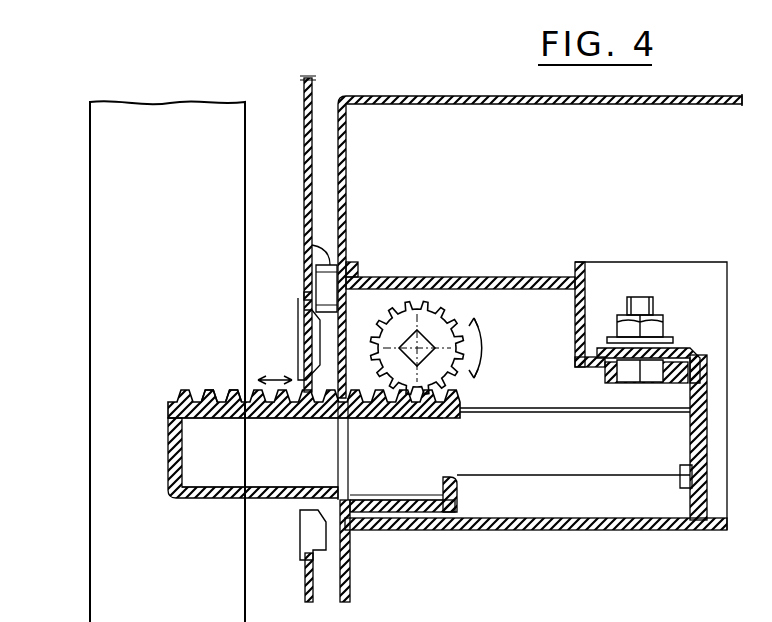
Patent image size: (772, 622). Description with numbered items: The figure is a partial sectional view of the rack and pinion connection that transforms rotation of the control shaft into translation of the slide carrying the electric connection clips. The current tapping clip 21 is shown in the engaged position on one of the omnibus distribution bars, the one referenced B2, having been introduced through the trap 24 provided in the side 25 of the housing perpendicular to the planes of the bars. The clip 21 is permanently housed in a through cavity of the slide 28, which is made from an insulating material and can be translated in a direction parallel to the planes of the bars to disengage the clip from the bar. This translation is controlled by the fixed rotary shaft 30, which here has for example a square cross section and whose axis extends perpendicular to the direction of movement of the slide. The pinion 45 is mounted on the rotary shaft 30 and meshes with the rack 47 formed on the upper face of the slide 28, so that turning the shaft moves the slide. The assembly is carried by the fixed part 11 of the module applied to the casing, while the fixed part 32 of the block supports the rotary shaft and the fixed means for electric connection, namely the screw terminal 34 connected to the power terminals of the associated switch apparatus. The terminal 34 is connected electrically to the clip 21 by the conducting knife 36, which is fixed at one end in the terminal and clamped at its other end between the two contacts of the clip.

The distribution bar B2 is at (102, 258).
The fixed part 11 is at (466, 96).
The current tapping clip 21 is at (200, 470).
The trap 24 is at (300, 535).
The side of the housing 25 is at (305, 156).
The slide 28 is at (170, 408).
The rotary shaft 30 is at (437, 336).
The fixed part 32 is at (492, 277).
The screw 34 is at (665, 346).
The conducting knife 36 is at (585, 456).
The pinion 45 is at (462, 374).
The rack 47 is at (226, 392).